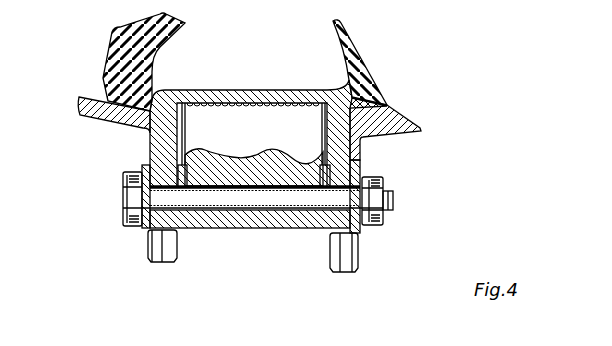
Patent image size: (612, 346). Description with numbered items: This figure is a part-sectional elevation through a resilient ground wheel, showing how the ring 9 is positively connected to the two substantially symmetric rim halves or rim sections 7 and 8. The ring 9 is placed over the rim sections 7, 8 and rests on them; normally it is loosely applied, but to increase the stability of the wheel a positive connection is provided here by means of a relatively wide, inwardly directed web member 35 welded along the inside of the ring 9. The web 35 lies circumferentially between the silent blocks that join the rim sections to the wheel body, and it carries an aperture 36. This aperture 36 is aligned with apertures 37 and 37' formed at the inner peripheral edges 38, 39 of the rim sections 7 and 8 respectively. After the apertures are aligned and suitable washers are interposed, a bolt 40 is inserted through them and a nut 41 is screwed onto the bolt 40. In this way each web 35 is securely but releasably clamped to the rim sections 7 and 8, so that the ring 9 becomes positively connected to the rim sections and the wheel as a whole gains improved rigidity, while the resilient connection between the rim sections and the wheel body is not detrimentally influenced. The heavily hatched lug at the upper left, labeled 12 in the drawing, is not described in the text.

The rim section 7 is at (114, 124).
The rim section 8 is at (393, 127).
The ring 9 is at (198, 88).
The lug 12 is at (132, 43).
The web member 35 is at (263, 220).
The aperture 36 is at (223, 233).
The aperture 37 is at (119, 223).
The aperture 37' is at (373, 209).
The inner peripheral edge 38 is at (148, 257).
The inner peripheral edge 39 is at (338, 233).
The bolt 40 is at (128, 220).
The nut 41 is at (375, 193).